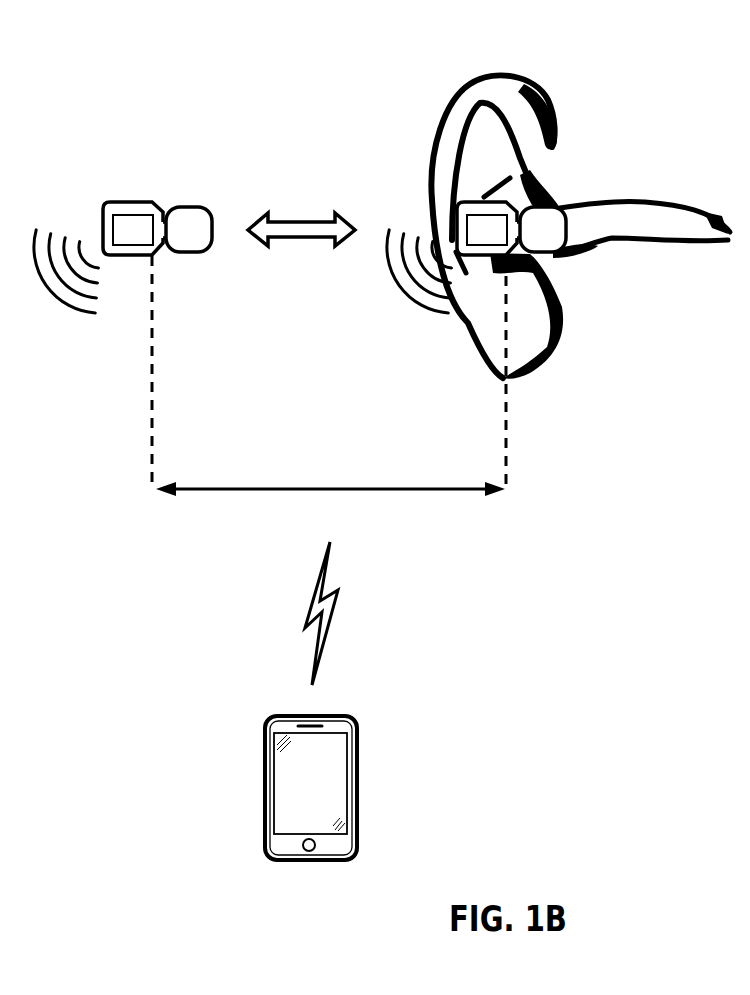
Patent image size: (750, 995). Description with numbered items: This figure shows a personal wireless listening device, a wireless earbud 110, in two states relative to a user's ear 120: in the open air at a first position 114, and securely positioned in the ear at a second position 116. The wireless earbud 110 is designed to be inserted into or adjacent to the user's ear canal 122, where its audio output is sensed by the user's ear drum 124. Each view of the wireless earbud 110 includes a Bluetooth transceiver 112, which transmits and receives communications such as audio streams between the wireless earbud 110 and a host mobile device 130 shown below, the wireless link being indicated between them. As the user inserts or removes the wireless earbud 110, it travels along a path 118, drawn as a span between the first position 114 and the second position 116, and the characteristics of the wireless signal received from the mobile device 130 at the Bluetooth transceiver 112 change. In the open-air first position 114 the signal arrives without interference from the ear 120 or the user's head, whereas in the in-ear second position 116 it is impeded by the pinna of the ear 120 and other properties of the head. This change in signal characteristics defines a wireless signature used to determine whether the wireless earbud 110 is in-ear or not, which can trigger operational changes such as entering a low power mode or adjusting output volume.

The wireless earbud 110 is at (133, 202).
The Bluetooth transceiver 112 is at (120, 212).
The first position 114 is at (150, 493).
The second position 116 is at (508, 493).
The path 118 is at (297, 487).
The ear 120 is at (432, 128).
The ear canal 122 is at (628, 224).
The ear drum 124 is at (708, 208).
The mobile device 130 is at (357, 723).